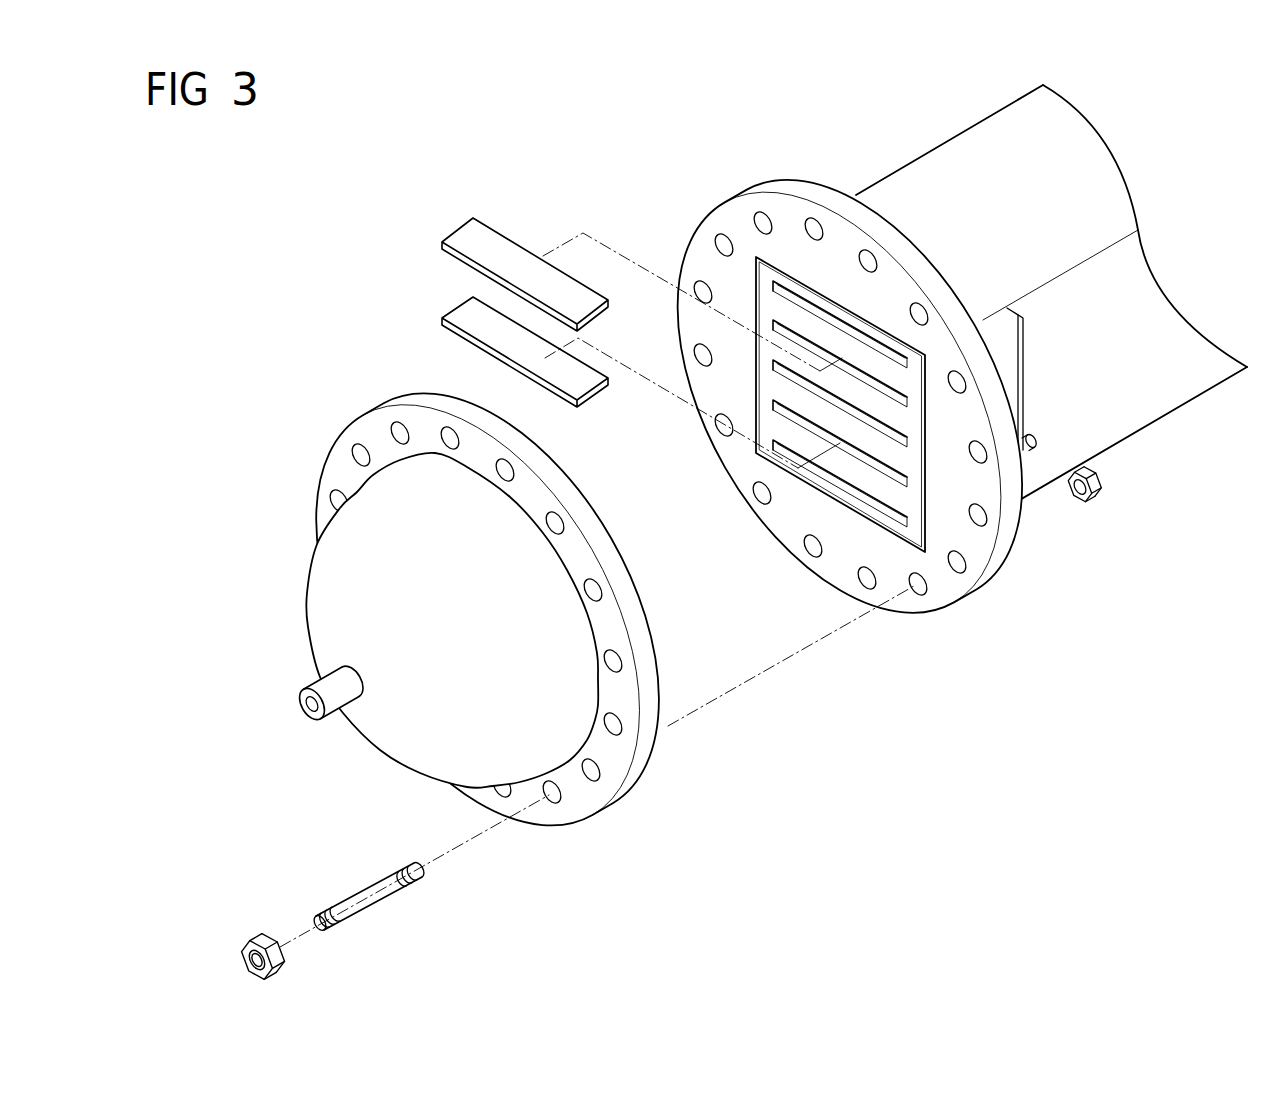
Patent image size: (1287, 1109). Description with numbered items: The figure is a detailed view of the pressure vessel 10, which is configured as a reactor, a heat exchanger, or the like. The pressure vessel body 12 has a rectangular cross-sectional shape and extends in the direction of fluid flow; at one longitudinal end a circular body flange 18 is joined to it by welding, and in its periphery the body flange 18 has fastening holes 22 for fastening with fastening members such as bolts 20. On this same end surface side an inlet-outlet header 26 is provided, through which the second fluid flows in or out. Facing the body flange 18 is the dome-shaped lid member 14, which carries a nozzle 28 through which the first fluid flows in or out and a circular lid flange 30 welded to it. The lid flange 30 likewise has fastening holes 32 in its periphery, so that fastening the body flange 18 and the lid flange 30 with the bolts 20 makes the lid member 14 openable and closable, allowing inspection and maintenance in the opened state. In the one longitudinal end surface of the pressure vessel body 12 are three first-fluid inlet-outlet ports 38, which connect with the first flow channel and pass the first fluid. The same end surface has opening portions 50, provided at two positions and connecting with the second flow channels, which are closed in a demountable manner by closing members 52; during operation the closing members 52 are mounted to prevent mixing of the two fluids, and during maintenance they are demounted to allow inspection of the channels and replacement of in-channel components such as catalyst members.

The pressure vessel 10 is at (272, 292).
The pressure vessel body 12 is at (938, 150).
The lid member 14 is at (304, 619).
The body flange 18 is at (784, 182).
The bolt 20 is at (384, 899).
The fastening hole 22 is at (920, 595).
The inlet-outlet header 26 is at (1031, 366).
The nozzle 28 is at (336, 724).
The lid flange 30 is at (414, 394).
The fastening hole 32 is at (556, 801).
The first-fluid inlet-outlet port 38 is at (909, 365).
The opening portion 50 is at (791, 413).
The closing member 52 is at (458, 224).